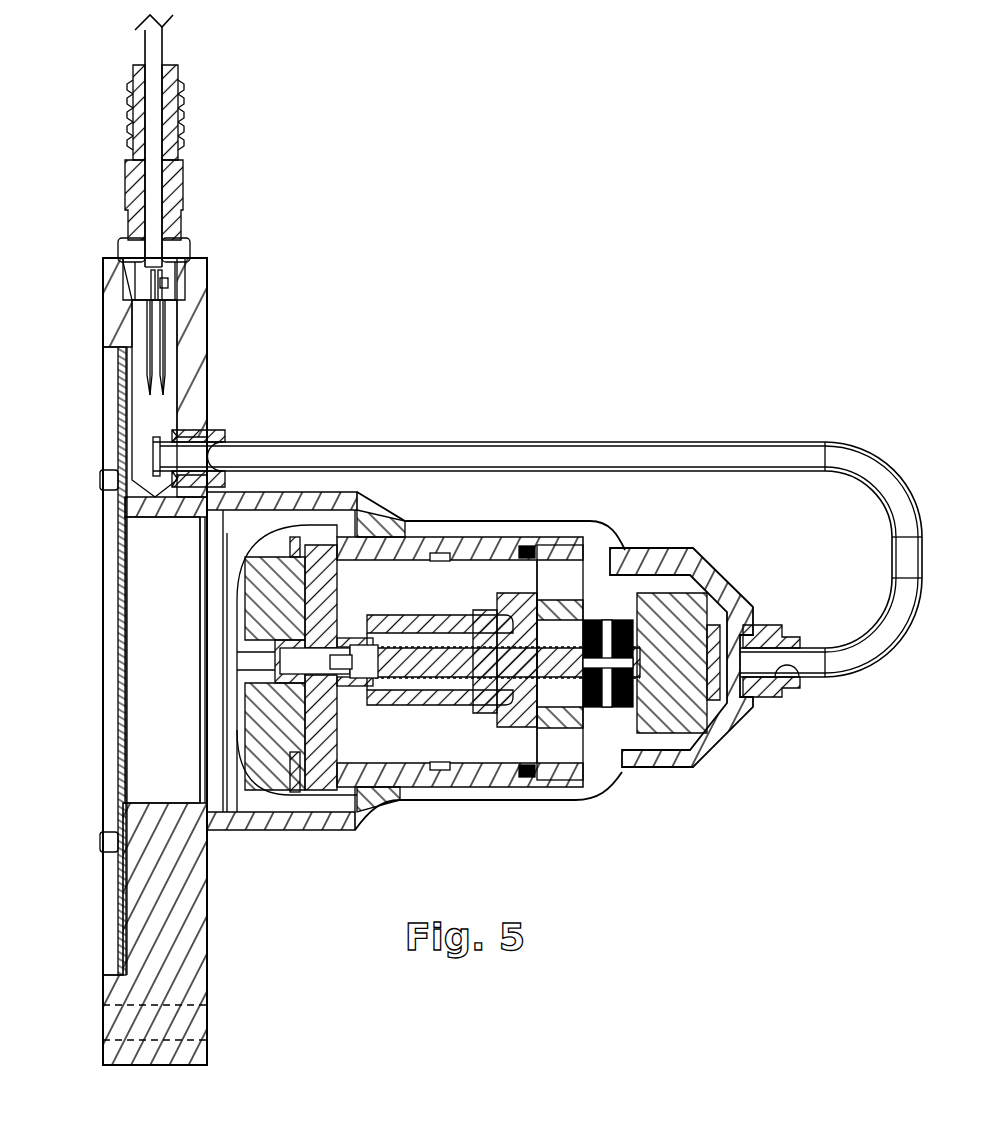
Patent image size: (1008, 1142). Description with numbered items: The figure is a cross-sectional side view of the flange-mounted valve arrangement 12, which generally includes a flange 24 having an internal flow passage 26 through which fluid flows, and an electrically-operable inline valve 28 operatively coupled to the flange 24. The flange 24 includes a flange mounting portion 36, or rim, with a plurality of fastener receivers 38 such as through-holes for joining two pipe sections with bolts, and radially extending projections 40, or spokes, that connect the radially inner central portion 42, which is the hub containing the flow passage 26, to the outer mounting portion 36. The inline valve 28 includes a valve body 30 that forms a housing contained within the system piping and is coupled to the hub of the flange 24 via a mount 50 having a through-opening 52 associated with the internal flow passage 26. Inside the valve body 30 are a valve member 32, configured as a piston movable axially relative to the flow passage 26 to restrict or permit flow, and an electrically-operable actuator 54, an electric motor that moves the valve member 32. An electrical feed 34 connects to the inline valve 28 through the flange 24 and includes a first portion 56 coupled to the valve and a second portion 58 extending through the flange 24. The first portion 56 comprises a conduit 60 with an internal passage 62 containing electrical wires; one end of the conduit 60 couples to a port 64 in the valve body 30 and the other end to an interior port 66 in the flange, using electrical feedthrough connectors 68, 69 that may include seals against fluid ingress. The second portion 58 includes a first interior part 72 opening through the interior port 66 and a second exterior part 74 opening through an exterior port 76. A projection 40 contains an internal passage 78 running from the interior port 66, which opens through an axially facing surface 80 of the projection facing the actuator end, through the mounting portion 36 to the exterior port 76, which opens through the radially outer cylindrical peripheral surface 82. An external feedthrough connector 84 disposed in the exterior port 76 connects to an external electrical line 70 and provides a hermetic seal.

The valve arrangement 12 is at (449, 297).
The flange 24 is at (230, 264).
The internal flow passage 26 is at (158, 508).
The inline valve 28 is at (669, 778).
The valve body 30 is at (452, 790).
The valve member 32 is at (290, 742).
The electrical feed 34 is at (320, 440).
The flange mounting portion 36 is at (205, 284).
The fastener receivers 38 is at (178, 1025).
The radially extending projections 40 is at (113, 480).
The radially inner central portion 42 is at (165, 793).
The mount 50 is at (310, 796).
The through-opening 52 is at (245, 782).
The electrically-operable actuator 54 is at (610, 742).
The first portion of the electrical feed 56 is at (535, 440).
The second portion of the electrical feed 58 is at (48, 262).
The conduit 60 is at (868, 440).
The internal passage 62 is at (773, 458).
The port 64 is at (797, 672).
The interior port 66 is at (215, 437).
The electrical feedthrough connector 68 is at (791, 640).
The electrical feedthrough connector 69 is at (224, 448).
The external electrical line 70 is at (155, 50).
The first interior part 72 is at (96, 264).
The second exterior part 74 is at (96, 355).
The exterior port 76 is at (132, 282).
The internal passage 78 is at (202, 366).
The axially facing surface 80 is at (205, 428).
The radially outer cylindrical peripheral surface 82 is at (200, 263).
The external feedthrough connector 84 is at (128, 262).